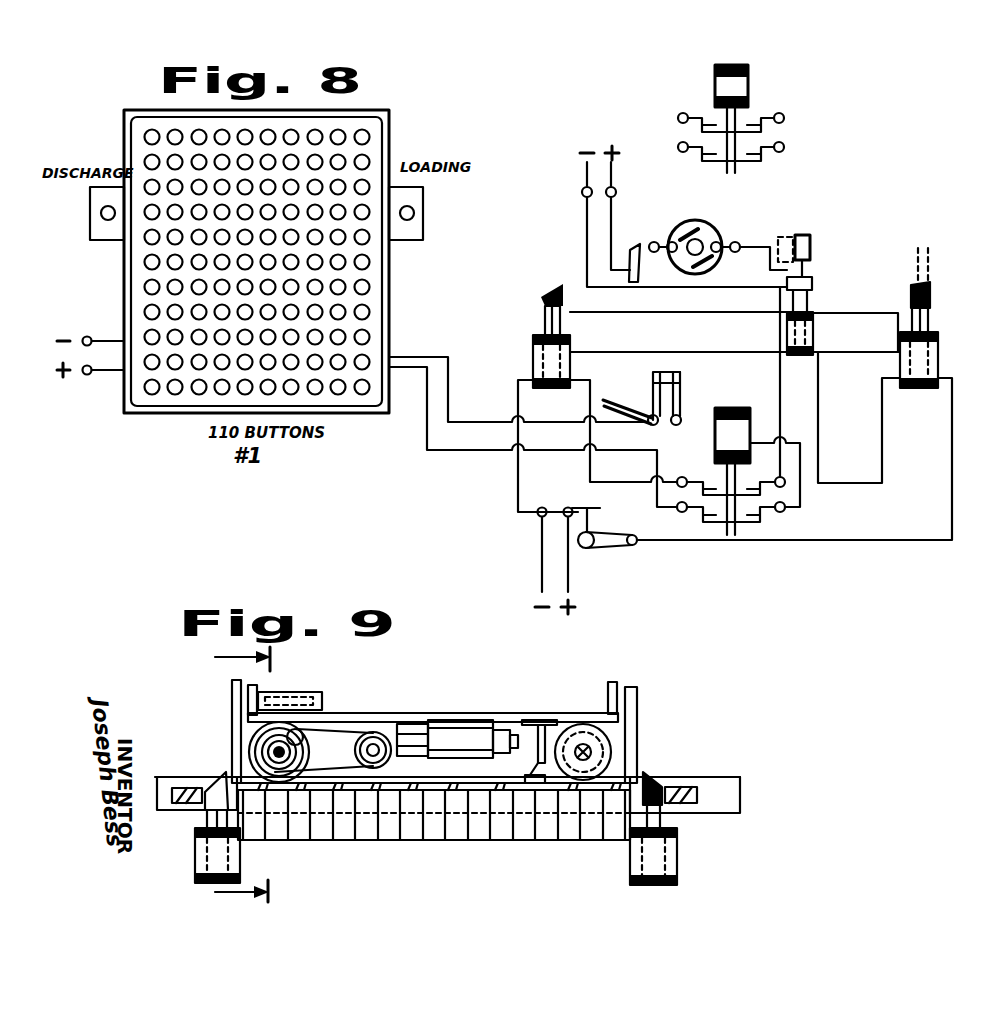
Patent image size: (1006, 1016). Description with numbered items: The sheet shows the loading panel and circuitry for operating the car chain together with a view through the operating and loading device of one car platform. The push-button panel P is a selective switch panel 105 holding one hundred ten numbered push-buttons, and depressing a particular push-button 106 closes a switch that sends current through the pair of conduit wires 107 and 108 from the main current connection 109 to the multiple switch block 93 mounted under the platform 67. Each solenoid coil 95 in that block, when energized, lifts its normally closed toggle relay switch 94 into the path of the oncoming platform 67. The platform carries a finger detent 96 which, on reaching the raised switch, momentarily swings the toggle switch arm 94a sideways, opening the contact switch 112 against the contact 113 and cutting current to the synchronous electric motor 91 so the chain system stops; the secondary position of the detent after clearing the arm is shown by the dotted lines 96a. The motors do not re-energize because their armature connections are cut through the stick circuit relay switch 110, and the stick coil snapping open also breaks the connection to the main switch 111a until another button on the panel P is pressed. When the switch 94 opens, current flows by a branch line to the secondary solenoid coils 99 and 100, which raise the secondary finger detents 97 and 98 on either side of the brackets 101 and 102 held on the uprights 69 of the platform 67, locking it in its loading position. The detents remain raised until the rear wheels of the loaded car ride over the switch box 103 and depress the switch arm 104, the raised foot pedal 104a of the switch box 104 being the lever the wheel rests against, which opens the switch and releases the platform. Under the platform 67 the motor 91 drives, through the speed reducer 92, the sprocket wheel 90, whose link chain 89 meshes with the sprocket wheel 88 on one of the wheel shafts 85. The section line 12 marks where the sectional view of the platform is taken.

In FIG. 8, the push-button panel P is at (398, 138).
In FIG. 8, the selective switch panel 105 is at (420, 209).
In FIG. 8, the push-button 106 is at (368, 262).
In FIG. 8, the conduit wire 107 is at (446, 340).
In FIG. 8, the conduit wire 108 is at (443, 450).
In FIG. 8, the main current connection 109 is at (112, 344).
In FIG. 8, the stick circuit relay switch 110 is at (755, 98).
In FIG. 8, the synchronous electric motor 91 is at (716, 233).
In FIG. 9, the synchronous electric motor 91 is at (546, 735).
In FIG. 8, the toggle switch arm 94a is at (778, 262).
In FIG. 8, the secondary detent position 96a is at (806, 234).
In FIG. 8, the finger detent 96 is at (812, 253).
In FIG. 9, the finger detent 96 is at (598, 742).
In FIG. 8, the toggle relay switch 94 is at (812, 285).
In FIG. 9, the toggle relay switch 94 is at (530, 784).
In FIG. 8, the solenoid coil 95 is at (814, 336).
In FIG. 9, the solenoid coil 95 is at (497, 840).
In FIG. 8, the secondary finger detent 97 is at (552, 290).
In FIG. 9, the secondary finger detent 97 is at (216, 775).
In FIG. 8, the secondary solenoid coil 99 is at (533, 353).
In FIG. 9, the secondary solenoid coil 99 is at (195, 865).
In FIG. 8, the secondary finger detent 98 is at (930, 297).
In FIG. 9, the secondary finger detent 98 is at (660, 776).
In FIG. 8, the secondary solenoid coil 100 is at (938, 353).
In FIG. 9, the secondary solenoid coil 100 is at (677, 861).
In FIG. 8, the foot pedal 104a is at (633, 399).
In FIG. 8, the contact 113 is at (662, 378).
In FIG. 8, the contact switch 112 is at (684, 395).
In FIG. 8, the main switch 111a is at (757, 525).
In FIG. 9, the section line 12 is at (264, 776).
In FIG. 9, the bracket 101 is at (240, 715).
In FIG. 9, the upright 69 is at (620, 683).
In FIG. 9, the platform 67 is at (573, 706).
In FIG. 9, the bracket 102 is at (640, 697).
In FIG. 9, the switch arm 104 is at (290, 690).
In FIG. 9, the switch box 103 is at (303, 692).
In FIG. 9, the shaft 85 is at (283, 748).
In FIG. 9, the sprocket wheel 88 is at (345, 738).
In FIG. 9, the link chain 89 is at (407, 722).
In FIG. 9, the sprocket wheel 90 is at (480, 728).
In FIG. 9, the speed reducer 92 is at (408, 785).
In FIG. 9, the multiple switch block 93 is at (613, 843).